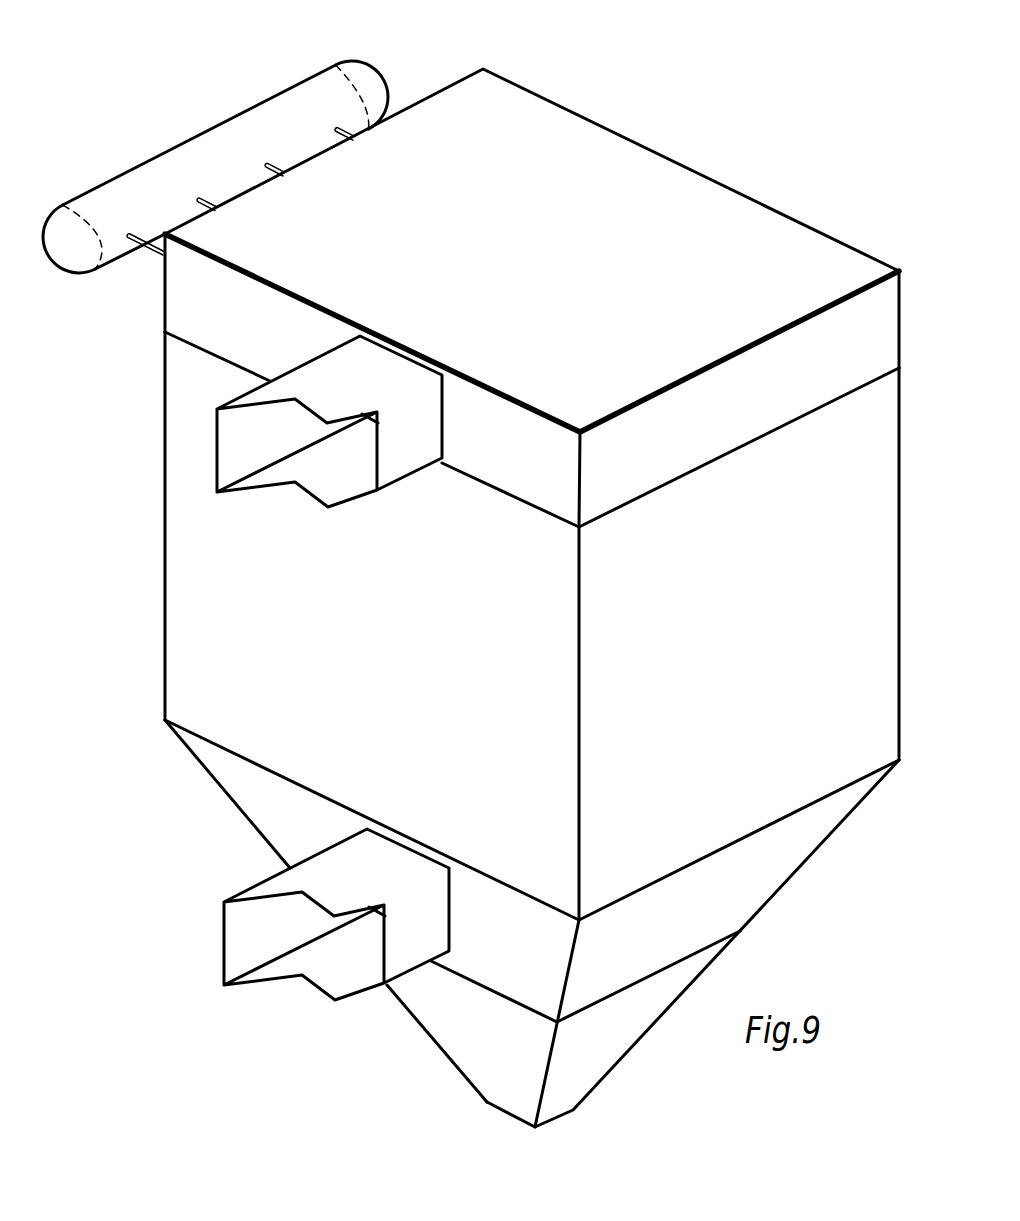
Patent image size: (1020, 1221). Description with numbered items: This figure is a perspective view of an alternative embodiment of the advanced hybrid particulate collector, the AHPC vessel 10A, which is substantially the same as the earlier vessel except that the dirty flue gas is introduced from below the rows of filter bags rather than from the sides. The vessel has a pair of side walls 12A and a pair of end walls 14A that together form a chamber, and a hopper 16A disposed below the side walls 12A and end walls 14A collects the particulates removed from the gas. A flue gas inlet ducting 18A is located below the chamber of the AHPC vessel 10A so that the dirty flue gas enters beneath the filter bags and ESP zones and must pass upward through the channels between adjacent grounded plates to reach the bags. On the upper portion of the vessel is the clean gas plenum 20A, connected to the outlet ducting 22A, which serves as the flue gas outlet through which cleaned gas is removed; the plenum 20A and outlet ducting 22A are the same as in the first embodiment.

The AHPC vessel 10A is at (735, 72).
The side wall 12A is at (197, 613).
The end wall 14A is at (782, 658).
The hopper 16A is at (460, 1005).
The flue gas inlet ducting 18A is at (252, 936).
The clean gas plenum 20A is at (723, 400).
The outlet ducting 22A is at (239, 425).